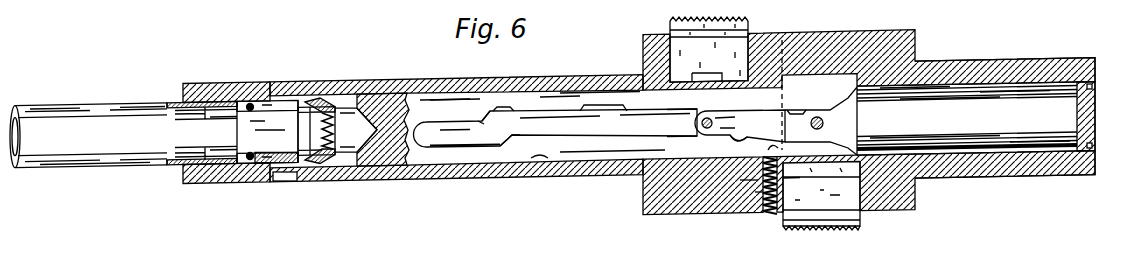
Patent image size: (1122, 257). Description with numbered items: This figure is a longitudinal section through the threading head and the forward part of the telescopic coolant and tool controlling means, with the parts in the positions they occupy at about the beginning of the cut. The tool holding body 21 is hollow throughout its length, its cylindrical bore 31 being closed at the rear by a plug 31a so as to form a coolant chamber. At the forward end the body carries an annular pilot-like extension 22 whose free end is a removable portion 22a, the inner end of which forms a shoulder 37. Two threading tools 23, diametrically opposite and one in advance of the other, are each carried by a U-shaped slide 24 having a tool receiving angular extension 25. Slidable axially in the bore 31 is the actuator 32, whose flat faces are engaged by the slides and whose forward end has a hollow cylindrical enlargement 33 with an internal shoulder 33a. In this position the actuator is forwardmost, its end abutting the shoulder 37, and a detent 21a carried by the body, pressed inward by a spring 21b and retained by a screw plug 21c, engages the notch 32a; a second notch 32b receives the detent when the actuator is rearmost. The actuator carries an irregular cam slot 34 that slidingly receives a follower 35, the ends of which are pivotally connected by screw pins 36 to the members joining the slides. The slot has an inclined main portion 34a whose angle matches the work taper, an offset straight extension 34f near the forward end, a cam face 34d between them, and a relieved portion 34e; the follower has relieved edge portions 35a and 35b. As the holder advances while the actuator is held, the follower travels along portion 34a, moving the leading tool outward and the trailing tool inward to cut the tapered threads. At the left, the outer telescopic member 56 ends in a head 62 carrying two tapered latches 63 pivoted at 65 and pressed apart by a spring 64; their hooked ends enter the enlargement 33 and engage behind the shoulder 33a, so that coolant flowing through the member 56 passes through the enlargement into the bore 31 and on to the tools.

The tool holding body 21 is at (900, 40).
The detent 21a is at (750, 187).
The spring 21b is at (763, 192).
The screw plug 21c is at (795, 178).
The pilot-like extension 22 is at (442, 174).
The removable portion 22a is at (252, 173).
The threading tools 23 is at (737, 22).
The U-shaped slide 24 is at (680, 55).
The tool receiving angular extension 25 is at (800, 188).
The bore 31 is at (1003, 90).
The plug 31a is at (1077, 157).
The actuator 32 is at (613, 150).
The notch 32a is at (537, 158).
The notch 32b is at (773, 145).
The cylindrical enlargement 33 is at (357, 162).
The shoulder 33a is at (318, 102).
The cam slot 34 is at (580, 125).
The main portion of the cam slot 34a is at (667, 112).
The cam face 34d is at (507, 143).
The relieved portion 34e is at (484, 118).
The offset straight extension 34f is at (602, 106).
The follower 35 is at (752, 115).
The relieved portion 35a is at (737, 130).
The relieved portion 35b is at (797, 114).
The screw pins 36 is at (822, 124).
The shoulder 37 is at (287, 186).
The outer telescopic member 56 is at (105, 162).
The head 62 is at (233, 98).
The latches 63 is at (305, 108).
The spring 64 is at (337, 153).
The pivot 65 is at (225, 183).